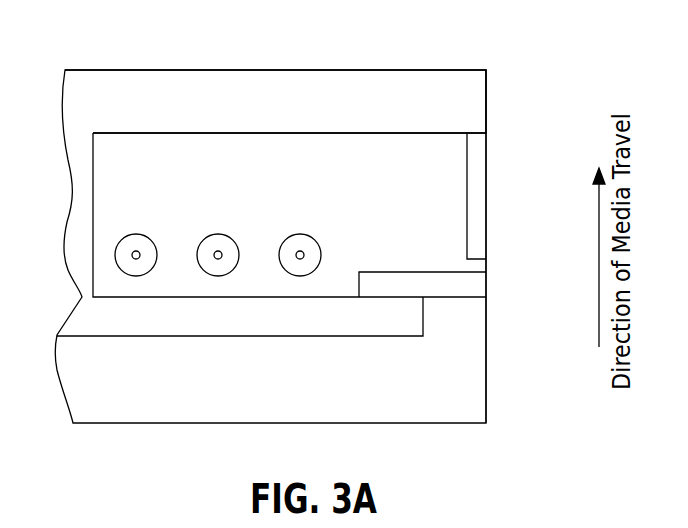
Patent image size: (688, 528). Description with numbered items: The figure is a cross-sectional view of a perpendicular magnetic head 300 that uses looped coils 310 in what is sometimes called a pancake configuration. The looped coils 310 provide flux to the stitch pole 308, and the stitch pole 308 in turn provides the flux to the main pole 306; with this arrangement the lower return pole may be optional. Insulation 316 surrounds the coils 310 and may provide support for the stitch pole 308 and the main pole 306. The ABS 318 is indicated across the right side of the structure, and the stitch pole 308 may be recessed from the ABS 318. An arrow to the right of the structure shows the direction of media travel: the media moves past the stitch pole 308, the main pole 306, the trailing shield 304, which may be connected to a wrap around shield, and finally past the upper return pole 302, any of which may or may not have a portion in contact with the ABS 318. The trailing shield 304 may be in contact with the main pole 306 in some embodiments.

The perpendicular magnetic head 300 is at (157, 52).
The upper return pole 302 is at (377, 111).
The trailing shield 304 is at (486, 175).
The main pole 306 is at (486, 280).
The stitch pole 308 is at (312, 326).
The looped coils 310 is at (134, 236).
The insulation 316 is at (423, 222).
The ABS 318 is at (486, 88).